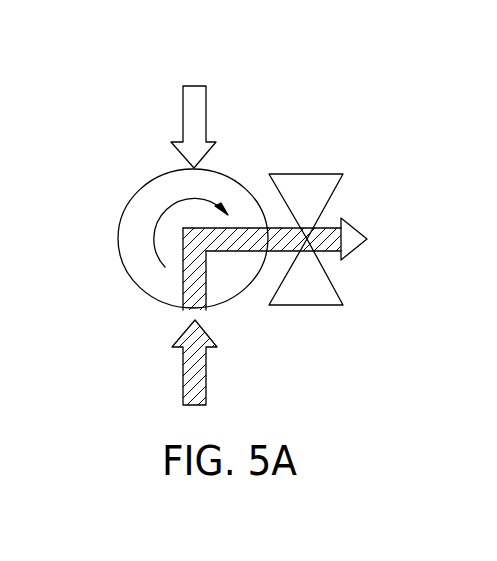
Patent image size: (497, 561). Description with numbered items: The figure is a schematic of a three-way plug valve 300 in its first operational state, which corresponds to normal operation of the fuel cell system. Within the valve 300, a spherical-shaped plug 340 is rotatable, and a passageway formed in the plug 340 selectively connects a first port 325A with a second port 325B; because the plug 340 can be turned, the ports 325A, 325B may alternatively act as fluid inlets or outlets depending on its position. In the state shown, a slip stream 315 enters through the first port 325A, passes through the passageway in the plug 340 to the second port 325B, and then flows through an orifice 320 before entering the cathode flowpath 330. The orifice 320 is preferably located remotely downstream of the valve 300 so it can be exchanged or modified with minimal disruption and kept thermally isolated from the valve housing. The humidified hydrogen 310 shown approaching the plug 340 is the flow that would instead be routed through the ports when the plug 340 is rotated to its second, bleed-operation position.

The three-way valve 300 is at (237, 210).
The humidified hydrogen 310 is at (207, 116).
The slip stream 315 is at (186, 375).
The orifice 320 is at (309, 305).
The first port 325A is at (200, 308).
The second port 325B is at (270, 228).
The cathode flowpath 330 is at (350, 232).
The spherical-shaped plug 340 is at (140, 196).